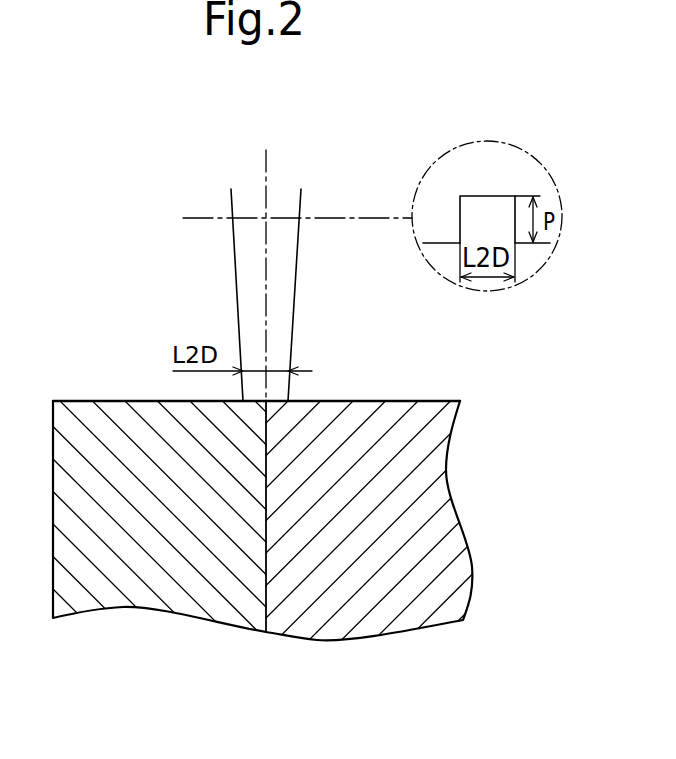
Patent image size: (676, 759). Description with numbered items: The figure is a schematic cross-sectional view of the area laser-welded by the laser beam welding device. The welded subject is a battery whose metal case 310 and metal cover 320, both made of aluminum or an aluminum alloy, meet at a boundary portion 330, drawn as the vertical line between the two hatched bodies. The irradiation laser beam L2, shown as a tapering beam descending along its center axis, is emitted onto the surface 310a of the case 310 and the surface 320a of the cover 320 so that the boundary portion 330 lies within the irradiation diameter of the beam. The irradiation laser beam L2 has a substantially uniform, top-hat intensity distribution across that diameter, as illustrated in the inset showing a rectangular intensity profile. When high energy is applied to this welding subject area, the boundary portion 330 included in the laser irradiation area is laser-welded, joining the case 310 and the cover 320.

The case 310 is at (458, 517).
The surface of the case 310a is at (380, 402).
The cover 320 is at (82, 412).
The surface of the cover 320a is at (140, 402).
The boundary portion 330 is at (269, 602).
The irradiation laser beam L2 is at (234, 252).